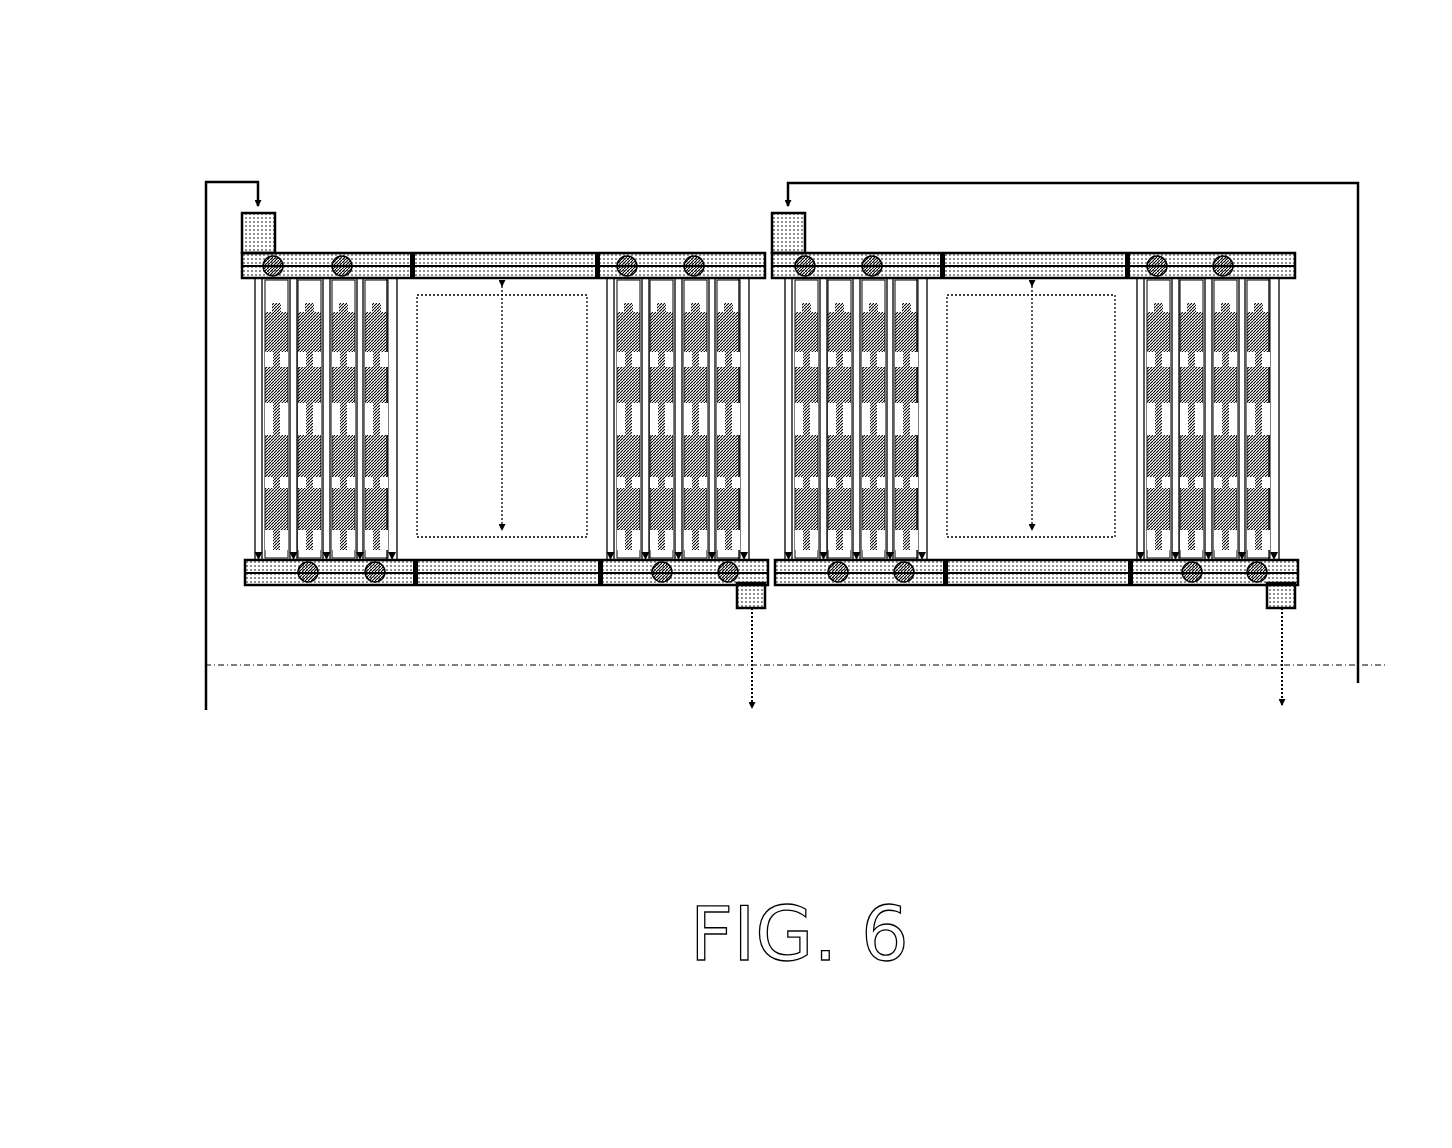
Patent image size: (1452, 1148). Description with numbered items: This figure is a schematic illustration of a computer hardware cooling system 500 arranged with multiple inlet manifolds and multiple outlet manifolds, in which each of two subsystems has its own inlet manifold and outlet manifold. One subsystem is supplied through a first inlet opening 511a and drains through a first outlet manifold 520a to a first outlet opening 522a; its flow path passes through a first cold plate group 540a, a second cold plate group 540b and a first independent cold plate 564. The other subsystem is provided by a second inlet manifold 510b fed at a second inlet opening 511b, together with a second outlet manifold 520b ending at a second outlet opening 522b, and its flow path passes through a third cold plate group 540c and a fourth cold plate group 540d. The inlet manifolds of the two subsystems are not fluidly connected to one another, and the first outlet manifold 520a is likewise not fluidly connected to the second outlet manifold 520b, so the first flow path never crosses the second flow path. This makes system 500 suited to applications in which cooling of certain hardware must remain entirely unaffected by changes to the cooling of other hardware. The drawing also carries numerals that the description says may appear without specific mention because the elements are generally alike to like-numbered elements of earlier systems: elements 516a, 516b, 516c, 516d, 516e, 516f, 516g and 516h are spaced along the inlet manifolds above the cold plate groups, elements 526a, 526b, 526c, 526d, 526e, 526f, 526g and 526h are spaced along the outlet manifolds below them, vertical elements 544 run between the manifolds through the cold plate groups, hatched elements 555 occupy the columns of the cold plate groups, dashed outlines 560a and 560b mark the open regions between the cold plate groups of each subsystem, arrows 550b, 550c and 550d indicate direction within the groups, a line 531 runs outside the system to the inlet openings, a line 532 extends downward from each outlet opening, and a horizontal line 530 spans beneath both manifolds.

The system 500 is at (482, 108).
The second inlet manifold 510b is at (510, 253).
The first inlet opening 511a is at (277, 228).
The second inlet opening 511b is at (768, 245).
The upper valve 516a is at (300, 253).
The upper valve 516b is at (363, 253).
The upper valve 516c is at (628, 253).
The upper valve 516d is at (695, 253).
The upper valve 516e is at (805, 253).
The upper valve 516f is at (872, 253).
The upper valve 516g is at (1157, 253).
The upper valve 516h is at (1223, 253).
The first outlet manifold 520a is at (262, 587).
The second outlet manifold 520b is at (1295, 573).
The first outlet opening 522a is at (767, 610).
The second outlet opening 522b is at (1295, 598).
The lower valve 526a is at (306, 587).
The lower valve 526b is at (378, 587).
The lower valve 526c is at (655, 587).
The lower valve 526d is at (728, 587).
The lower valve 526e is at (843, 590).
The lower valve 526f is at (913, 590).
The lower valve 526g is at (1190, 587).
The lower valve 526h is at (1258, 587).
The reference plane 530 is at (492, 665).
The inlet line 531 is at (206, 710).
The outlet line 532 is at (755, 700).
The first cold plate group 540a is at (240, 530).
The second cold plate group 540b is at (606, 528).
The third cold plate group 540c is at (950, 527).
The fourth cold plate group 540d is at (1128, 520).
The conduit 544 is at (262, 462).
The flow direction 550b is at (232, 505).
The flow direction 550c is at (937, 508).
The flow direction 550d is at (1118, 495).
The cell stack 555 is at (268, 418).
The empty bay 560a is at (551, 294).
The empty bay 560b is at (1068, 294).
The first independent cold plate 564 is at (500, 383).